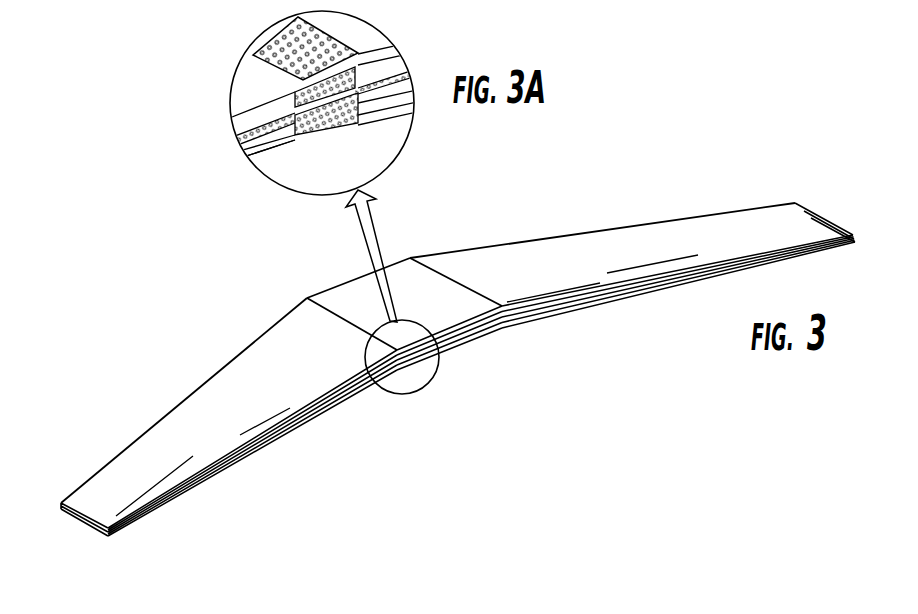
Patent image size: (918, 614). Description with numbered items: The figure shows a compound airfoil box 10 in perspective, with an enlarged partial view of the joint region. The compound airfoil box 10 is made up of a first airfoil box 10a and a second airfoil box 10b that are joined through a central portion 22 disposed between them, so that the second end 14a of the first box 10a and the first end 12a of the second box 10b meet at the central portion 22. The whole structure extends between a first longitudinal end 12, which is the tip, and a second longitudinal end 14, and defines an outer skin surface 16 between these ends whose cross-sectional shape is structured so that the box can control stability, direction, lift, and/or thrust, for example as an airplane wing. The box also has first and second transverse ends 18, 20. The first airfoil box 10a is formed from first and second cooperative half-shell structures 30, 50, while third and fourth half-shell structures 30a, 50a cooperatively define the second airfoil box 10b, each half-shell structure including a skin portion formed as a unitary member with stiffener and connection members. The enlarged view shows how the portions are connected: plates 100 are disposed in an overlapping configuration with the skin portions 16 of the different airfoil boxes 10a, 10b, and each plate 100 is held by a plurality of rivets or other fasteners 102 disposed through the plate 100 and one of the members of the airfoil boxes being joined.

In FIG. 3, the compound airfoil box 10 is at (451, 348).
In FIG. 3, the first airfoil box 10a is at (635, 238).
In FIG. 3, the second airfoil box 10b is at (219, 440).
In FIG. 3, the first longitudinal end 12 is at (817, 212).
In FIG. 3, the first end of the second box 12a is at (337, 309).
In FIG. 3, the second longitudinal end 14 is at (80, 518).
In FIG. 3A, the second longitudinal end 14 is at (180, 0).
In FIG. 3, the second end of the first box 14a is at (481, 298).
In FIG. 3, the outer skin surface 16 is at (277, 397).
In FIG. 3, the first transverse end 18 is at (510, 240).
In FIG. 3, the second transverse end 20 is at (517, 343).
In FIG. 3, the central portion 22 is at (425, 302).
In FIG. 3, the first half-shell structure 30 is at (587, 292).
In FIG. 3, the third half-shell structure 30a is at (170, 493).
In FIG. 3, the second half-shell structure 50 is at (642, 293).
In FIG. 3, the fourth half-shell structure 50a is at (222, 473).
In FIG. 3A, the plate 100 is at (253, 55).
In FIG. 3A, the fastener 102 is at (348, 50).